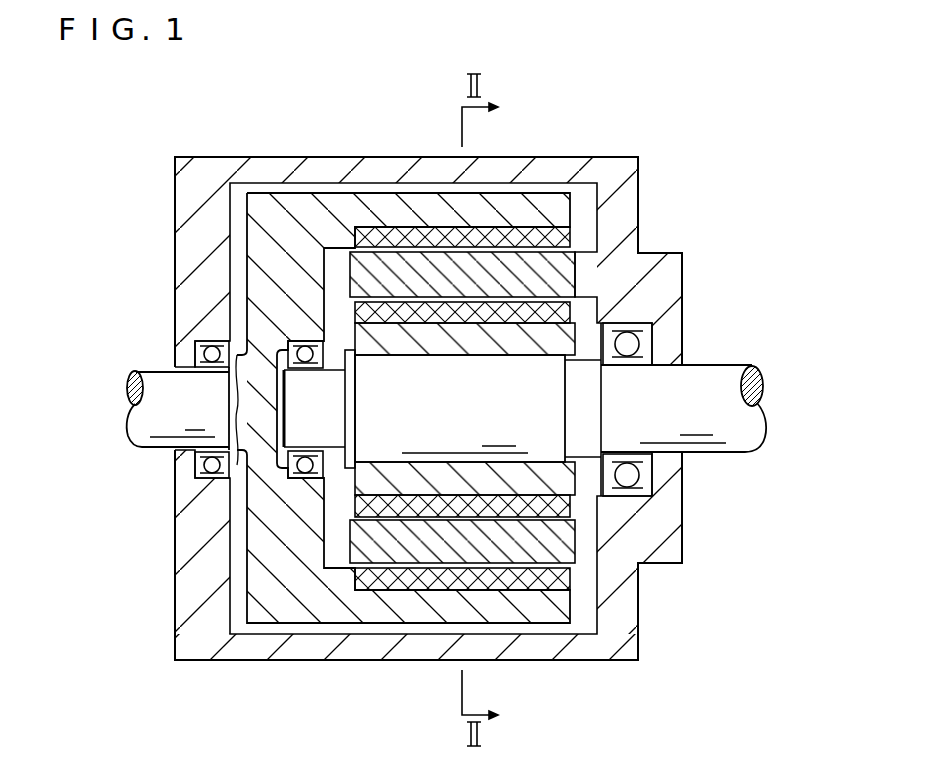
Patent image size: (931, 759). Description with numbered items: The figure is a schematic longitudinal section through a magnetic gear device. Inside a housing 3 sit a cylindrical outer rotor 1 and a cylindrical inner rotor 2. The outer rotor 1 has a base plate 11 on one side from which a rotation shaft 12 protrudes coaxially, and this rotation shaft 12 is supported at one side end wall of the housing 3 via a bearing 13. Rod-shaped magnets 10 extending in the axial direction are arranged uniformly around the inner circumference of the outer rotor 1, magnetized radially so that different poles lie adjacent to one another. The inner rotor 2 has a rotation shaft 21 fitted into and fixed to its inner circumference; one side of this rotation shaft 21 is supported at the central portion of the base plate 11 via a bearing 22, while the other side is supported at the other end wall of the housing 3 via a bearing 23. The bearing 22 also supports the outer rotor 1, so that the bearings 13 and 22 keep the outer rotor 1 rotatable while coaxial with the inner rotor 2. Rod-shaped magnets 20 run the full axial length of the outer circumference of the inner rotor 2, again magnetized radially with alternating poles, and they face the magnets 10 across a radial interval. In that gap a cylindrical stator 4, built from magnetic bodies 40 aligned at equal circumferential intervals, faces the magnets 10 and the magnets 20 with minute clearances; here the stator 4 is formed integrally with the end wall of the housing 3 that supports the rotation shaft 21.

The outer rotor 1 is at (341, 461).
The magnets 10 is at (378, 590).
The base plate 11 is at (253, 571).
The rotation shaft 12 is at (157, 373).
The bearing 13 is at (205, 341).
The inner rotor 2 is at (566, 337).
The magnets 20 is at (513, 305).
The rotation shaft 21 is at (731, 364).
The bearing 22 is at (302, 341).
The bearing 23 is at (631, 323).
The housing 3 is at (226, 165).
The stator 4 is at (452, 324).
The magnetic bodies 40 is at (388, 257).